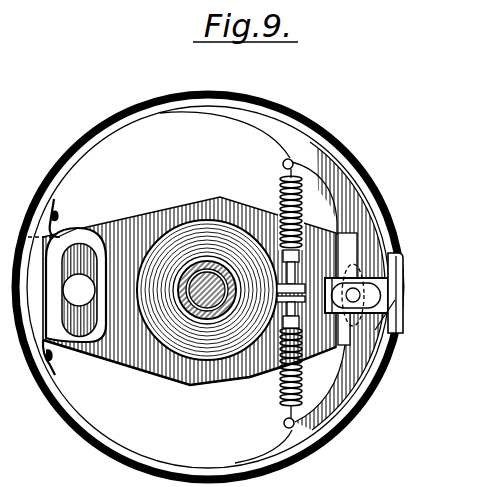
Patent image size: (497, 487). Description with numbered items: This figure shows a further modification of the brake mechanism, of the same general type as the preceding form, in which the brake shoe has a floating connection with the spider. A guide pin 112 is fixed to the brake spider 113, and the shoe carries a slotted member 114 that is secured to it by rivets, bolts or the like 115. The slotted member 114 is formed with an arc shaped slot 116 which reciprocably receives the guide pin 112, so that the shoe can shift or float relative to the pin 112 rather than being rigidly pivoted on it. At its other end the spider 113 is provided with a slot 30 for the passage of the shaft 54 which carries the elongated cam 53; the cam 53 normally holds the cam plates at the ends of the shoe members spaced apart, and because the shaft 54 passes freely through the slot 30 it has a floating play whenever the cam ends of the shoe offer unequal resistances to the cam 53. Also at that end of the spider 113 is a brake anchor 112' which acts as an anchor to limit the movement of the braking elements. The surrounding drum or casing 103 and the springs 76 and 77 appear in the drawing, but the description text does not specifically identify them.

The brake drum 103 is at (121, 109).
The brake spider 113 is at (153, 211).
The guide pin 112 is at (60, 290).
The brake anchor 112' is at (384, 338).
The slotted member 114 is at (67, 233).
The rivets, bolts or the like 115 is at (58, 212).
The arc shaped slot 116 is at (105, 352).
The slot 30 is at (384, 216).
The elongated cam 53 is at (338, 290).
The shaft 54 is at (340, 318).
The spring 76 is at (280, 195).
The spring 77 is at (278, 393).